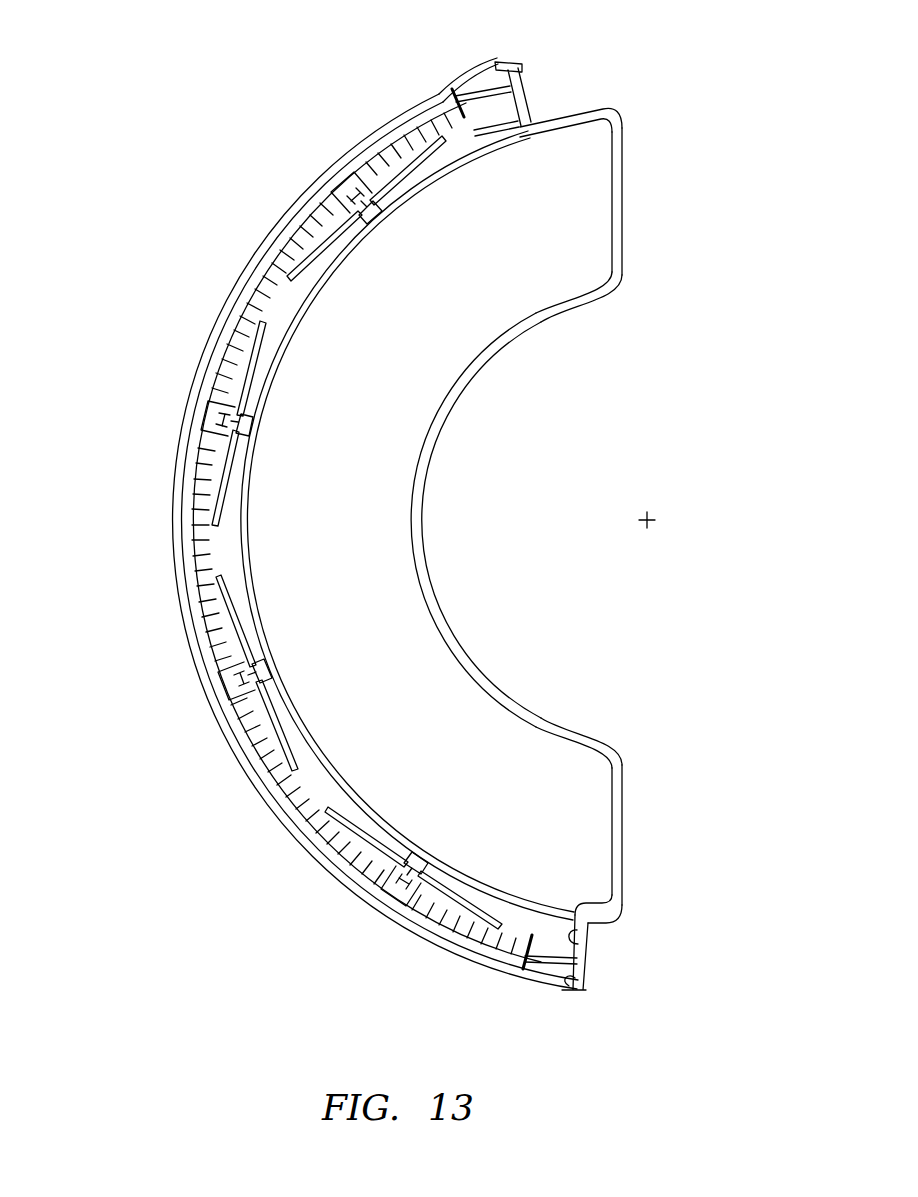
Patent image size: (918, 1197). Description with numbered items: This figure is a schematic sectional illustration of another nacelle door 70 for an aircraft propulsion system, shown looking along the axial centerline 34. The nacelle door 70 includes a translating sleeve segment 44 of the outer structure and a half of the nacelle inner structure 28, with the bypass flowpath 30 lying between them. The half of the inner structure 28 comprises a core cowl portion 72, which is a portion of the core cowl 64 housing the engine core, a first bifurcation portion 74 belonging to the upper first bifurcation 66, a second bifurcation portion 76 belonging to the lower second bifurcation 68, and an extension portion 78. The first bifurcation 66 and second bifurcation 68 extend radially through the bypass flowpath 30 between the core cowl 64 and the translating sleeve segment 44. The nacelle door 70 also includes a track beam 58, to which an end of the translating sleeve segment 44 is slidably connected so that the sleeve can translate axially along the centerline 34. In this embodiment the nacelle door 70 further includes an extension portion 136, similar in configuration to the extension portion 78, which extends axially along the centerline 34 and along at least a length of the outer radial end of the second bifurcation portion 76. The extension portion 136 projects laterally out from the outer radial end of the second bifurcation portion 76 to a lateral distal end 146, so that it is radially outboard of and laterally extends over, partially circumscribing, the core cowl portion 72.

The nacelle inner structure 28 is at (433, 469).
The bypass flowpath 30 is at (362, 628).
The axial centerline 34 is at (652, 525).
The translating sleeve segment 44 is at (270, 804).
The track beam 58 is at (572, 968).
The core cowl 64 is at (487, 712).
The first bifurcation 66 is at (606, 247).
The second bifurcation 68 is at (607, 833).
The nacelle door 70 is at (158, 678).
The core cowl portion 72 is at (468, 662).
The first bifurcation portion 74 is at (624, 199).
The second bifurcation portion 76 is at (626, 825).
The extension portion 78 is at (583, 112).
The extension portion 136 is at (602, 928).
The lateral distal end 146 is at (592, 902).